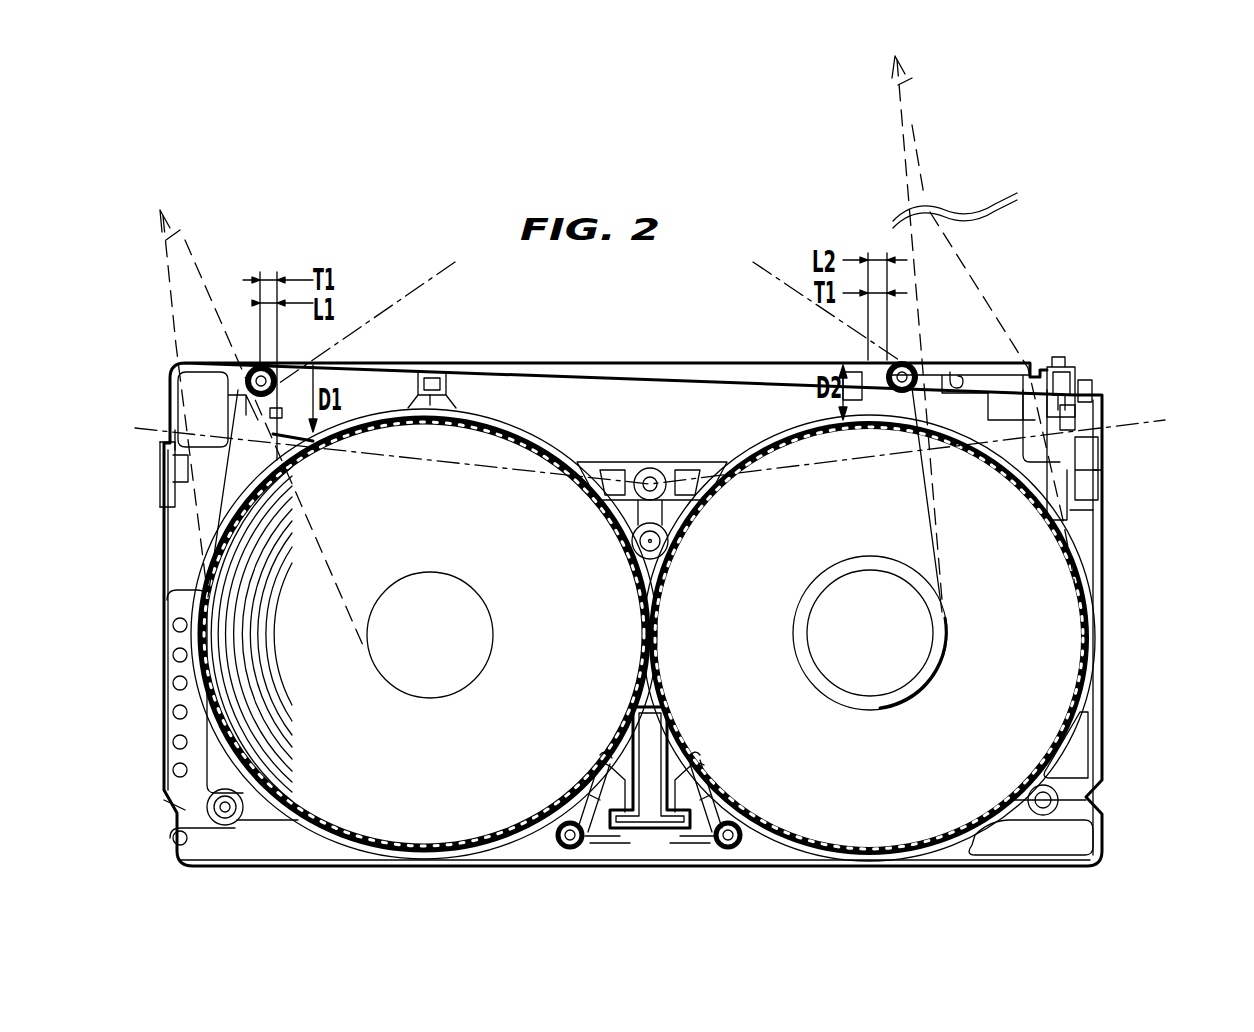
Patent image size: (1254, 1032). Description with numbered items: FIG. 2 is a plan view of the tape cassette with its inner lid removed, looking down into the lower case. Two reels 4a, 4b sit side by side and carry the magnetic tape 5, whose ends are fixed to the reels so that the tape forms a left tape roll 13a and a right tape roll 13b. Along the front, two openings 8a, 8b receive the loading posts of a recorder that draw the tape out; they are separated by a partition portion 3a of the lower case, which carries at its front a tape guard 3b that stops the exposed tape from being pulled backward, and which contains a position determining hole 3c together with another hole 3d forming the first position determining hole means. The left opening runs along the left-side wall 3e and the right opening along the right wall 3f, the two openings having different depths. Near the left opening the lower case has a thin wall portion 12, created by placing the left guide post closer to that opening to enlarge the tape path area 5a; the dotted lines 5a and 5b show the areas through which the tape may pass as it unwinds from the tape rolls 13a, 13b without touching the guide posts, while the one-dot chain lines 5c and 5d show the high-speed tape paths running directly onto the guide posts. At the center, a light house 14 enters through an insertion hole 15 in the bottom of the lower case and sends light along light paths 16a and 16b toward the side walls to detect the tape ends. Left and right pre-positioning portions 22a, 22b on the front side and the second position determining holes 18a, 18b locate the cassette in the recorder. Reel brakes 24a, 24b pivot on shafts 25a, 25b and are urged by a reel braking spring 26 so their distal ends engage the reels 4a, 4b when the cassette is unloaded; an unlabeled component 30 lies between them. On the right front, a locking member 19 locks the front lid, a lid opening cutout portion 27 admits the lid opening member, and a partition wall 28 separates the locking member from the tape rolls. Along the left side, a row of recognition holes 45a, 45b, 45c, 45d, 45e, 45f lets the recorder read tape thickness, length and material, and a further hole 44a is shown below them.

The reel 4a is at (205, 582).
The reel 4b is at (1095, 572).
The tape roll 13a is at (345, 795).
The tape roll 13b is at (945, 630).
The light house 14 is at (653, 477).
The insertion hole 15 is at (638, 478).
The pre-positioning portion 22a is at (224, 365).
The pre-positioning portion 22b is at (1031, 372).
The thin wall portion 12 is at (284, 388).
The partition portion 3a is at (445, 397).
The tape guard (stopper plate) 3b is at (428, 370).
The position determining hole 3c is at (446, 380).
The hole 3d is at (950, 366).
The left-side wall 3e is at (340, 378).
The right wall 3f is at (845, 370).
The opening 8a is at (370, 380).
The opening 8b is at (632, 372).
The magnetic tape 5 is at (735, 368).
The tape path area 5a is at (180, 250).
The tape path area 5b is at (912, 130).
The tape path 5c is at (446, 268).
The tape path 5d is at (745, 270).
The light path 16a is at (145, 430).
The light path 16b is at (1155, 418).
The locking member 19 is at (1062, 357).
The lid opening cutout portion 27 is at (1087, 385).
The partition wall 28 is at (1068, 410).
The second position determining hole 18a is at (222, 812).
The second position determining hole 18b is at (1045, 805).
The reel brake 24a is at (592, 800).
The reel brake 24b is at (704, 800).
The shaft 25a is at (565, 848).
The shaft 25b is at (742, 842).
The reel braking spring 26 is at (718, 838).
The reel lock release post 30 is at (650, 792).
The hole 44a is at (173, 837).
The recognition hole 45a is at (173, 770).
The recognition hole 45b is at (173, 741).
The recognition hole 45c is at (173, 711).
The recognition hole 45d is at (173, 682).
The recognition hole 45e is at (173, 652).
The recognition hole 45f is at (173, 622).